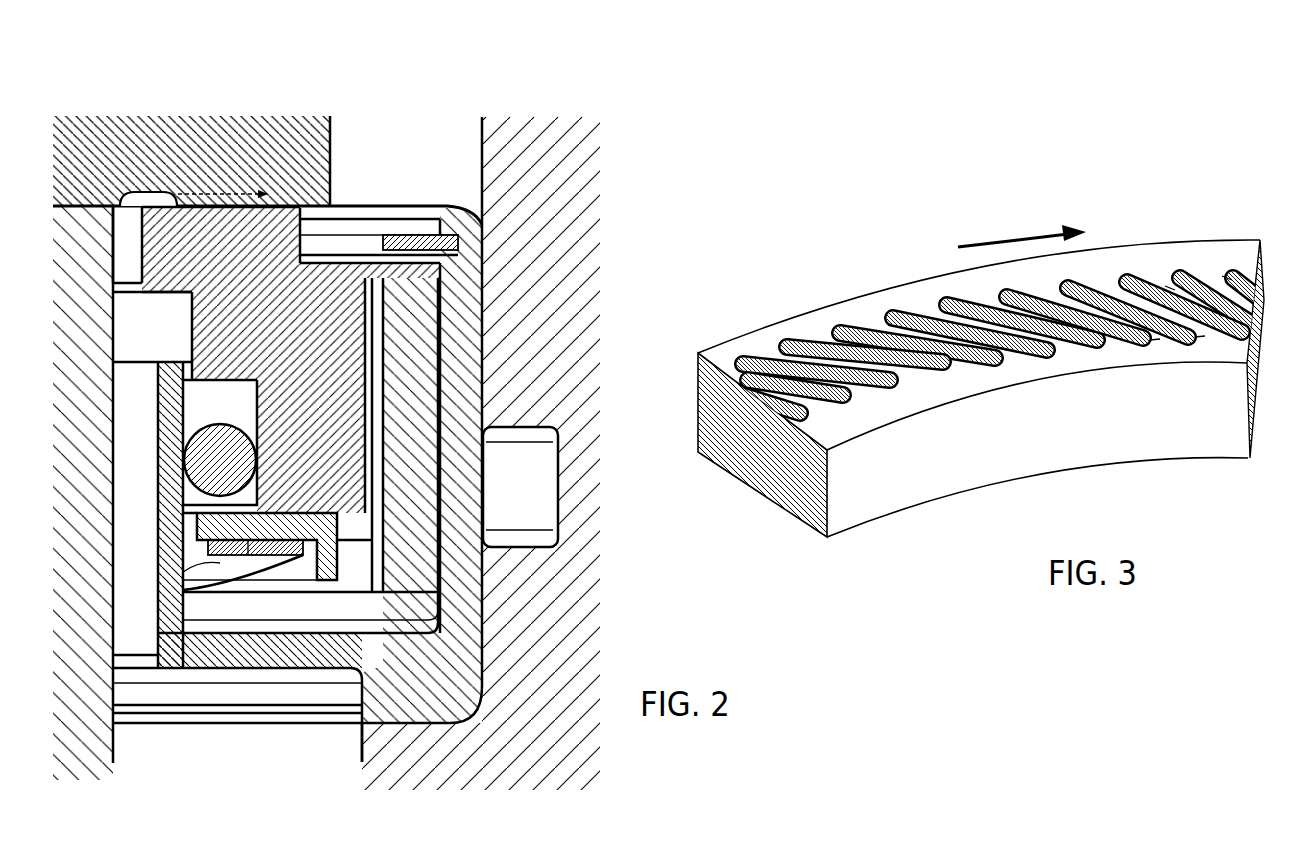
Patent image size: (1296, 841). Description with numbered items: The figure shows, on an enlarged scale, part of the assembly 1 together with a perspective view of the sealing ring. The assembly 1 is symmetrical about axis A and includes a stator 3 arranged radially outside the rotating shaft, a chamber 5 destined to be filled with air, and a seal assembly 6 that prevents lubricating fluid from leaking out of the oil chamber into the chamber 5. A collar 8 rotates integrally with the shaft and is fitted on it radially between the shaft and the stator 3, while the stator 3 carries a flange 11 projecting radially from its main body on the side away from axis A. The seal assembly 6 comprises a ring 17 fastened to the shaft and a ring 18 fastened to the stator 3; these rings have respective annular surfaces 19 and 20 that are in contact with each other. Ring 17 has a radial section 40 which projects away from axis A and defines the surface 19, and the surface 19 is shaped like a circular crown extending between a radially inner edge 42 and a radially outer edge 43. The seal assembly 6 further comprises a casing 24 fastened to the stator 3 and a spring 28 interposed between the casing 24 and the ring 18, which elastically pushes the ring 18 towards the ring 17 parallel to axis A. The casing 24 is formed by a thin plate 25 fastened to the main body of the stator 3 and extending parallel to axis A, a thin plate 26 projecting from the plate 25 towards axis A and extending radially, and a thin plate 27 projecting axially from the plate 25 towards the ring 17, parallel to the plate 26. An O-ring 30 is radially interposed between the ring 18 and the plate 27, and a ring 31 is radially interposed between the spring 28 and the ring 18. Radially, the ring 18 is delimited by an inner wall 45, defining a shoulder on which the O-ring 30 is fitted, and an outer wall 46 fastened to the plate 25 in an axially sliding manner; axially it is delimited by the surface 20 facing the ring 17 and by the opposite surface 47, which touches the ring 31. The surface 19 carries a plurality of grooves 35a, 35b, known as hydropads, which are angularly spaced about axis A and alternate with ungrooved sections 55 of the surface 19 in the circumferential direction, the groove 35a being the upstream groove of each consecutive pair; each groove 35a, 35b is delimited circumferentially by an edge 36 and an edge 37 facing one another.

In FIG. 2, the assembly 1 is at (243, 86).
In FIG. 2, the stator 3 is at (541, 188).
In FIG. 2, the chamber 5 is at (120, 692).
In FIG. 2, the seal assembly 6 is at (421, 150).
In FIG. 2, the collar 8 is at (88, 724).
In FIG. 2, the flange 11 is at (457, 737).
In FIG. 2, the ring 17 is at (116, 128).
In FIG. 3, the ring 17 is at (955, 226).
In FIG. 2, the ring 18 is at (186, 232).
In FIG. 2, the surface 19 is at (234, 215).
In FIG. 3, the surface 19 is at (1220, 262).
In FIG. 2, the surface 20 is at (240, 178).
In FIG. 2, the casing 24 is at (508, 637).
In FIG. 2, the thin plate 25 is at (466, 318).
In FIG. 2, the thin plate 26 is at (423, 663).
In FIG. 2, the thin plate 27 is at (167, 410).
In FIG. 2, the spring 28 is at (218, 565).
In FIG. 2, the O-ring 30 is at (213, 460).
In FIG. 2, the ring 31 is at (327, 562).
In FIG. 2, the groove 35a is at (150, 186).
In FIG. 3, the groove 35a is at (867, 415).
In FIG. 3, the groove 35b is at (937, 378).
In FIG. 3, the edge 36 is at (1157, 342).
In FIG. 3, the edge 37 is at (1170, 288).
In FIG. 2, the radial section 40 is at (318, 132).
In FIG. 3, the radial section 40 is at (832, 313).
In FIG. 3, the edge 42 is at (862, 452).
In FIG. 2, the edge 43 is at (338, 202).
In FIG. 3, the edge 43 is at (760, 320).
In FIG. 2, the wall 45 is at (135, 228).
In FIG. 2, the wall 46 is at (312, 243).
In FIG. 2, the surface 47 is at (247, 556).
In FIG. 3, the ungrooved section 55 is at (1023, 348).